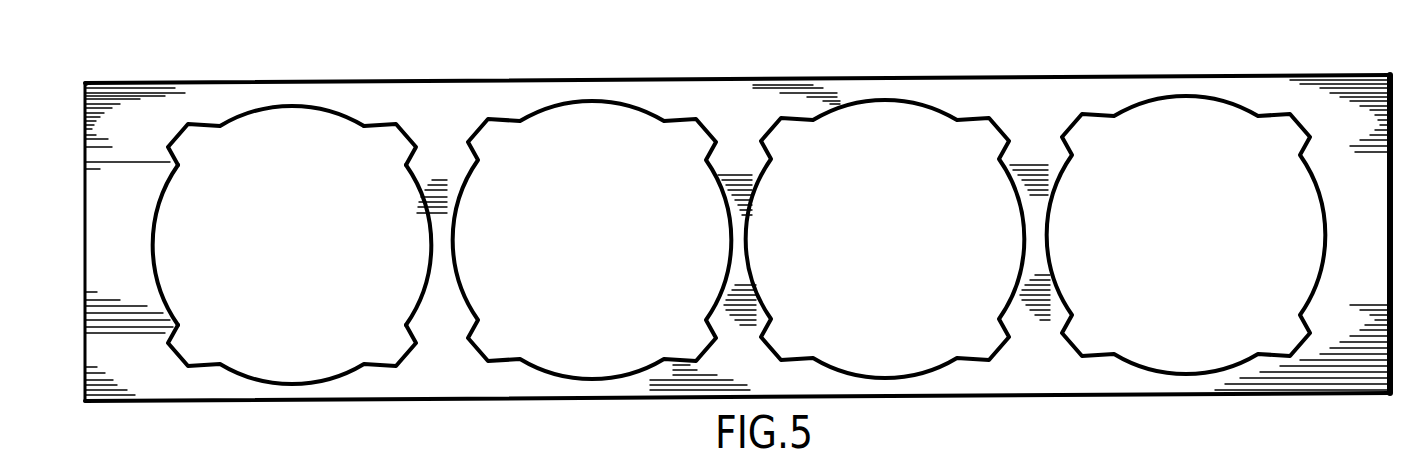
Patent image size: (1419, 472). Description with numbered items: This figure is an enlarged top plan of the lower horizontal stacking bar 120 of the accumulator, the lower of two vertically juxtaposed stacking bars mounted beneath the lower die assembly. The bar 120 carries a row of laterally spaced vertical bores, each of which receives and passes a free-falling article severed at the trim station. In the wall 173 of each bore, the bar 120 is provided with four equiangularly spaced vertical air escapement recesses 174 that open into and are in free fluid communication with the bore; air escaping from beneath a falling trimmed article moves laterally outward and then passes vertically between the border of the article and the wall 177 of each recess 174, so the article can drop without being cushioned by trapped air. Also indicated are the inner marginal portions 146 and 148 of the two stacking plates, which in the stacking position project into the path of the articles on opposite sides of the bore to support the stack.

The lower horizontal stacking bar 120 is at (179, 84).
The inner marginal portion 146 is at (158, 233).
The inner marginal portion 148 is at (431, 224).
The wall of bore 173 is at (327, 112).
The air escapement recess 174 is at (415, 138).
The wall of recess 177 is at (412, 343).